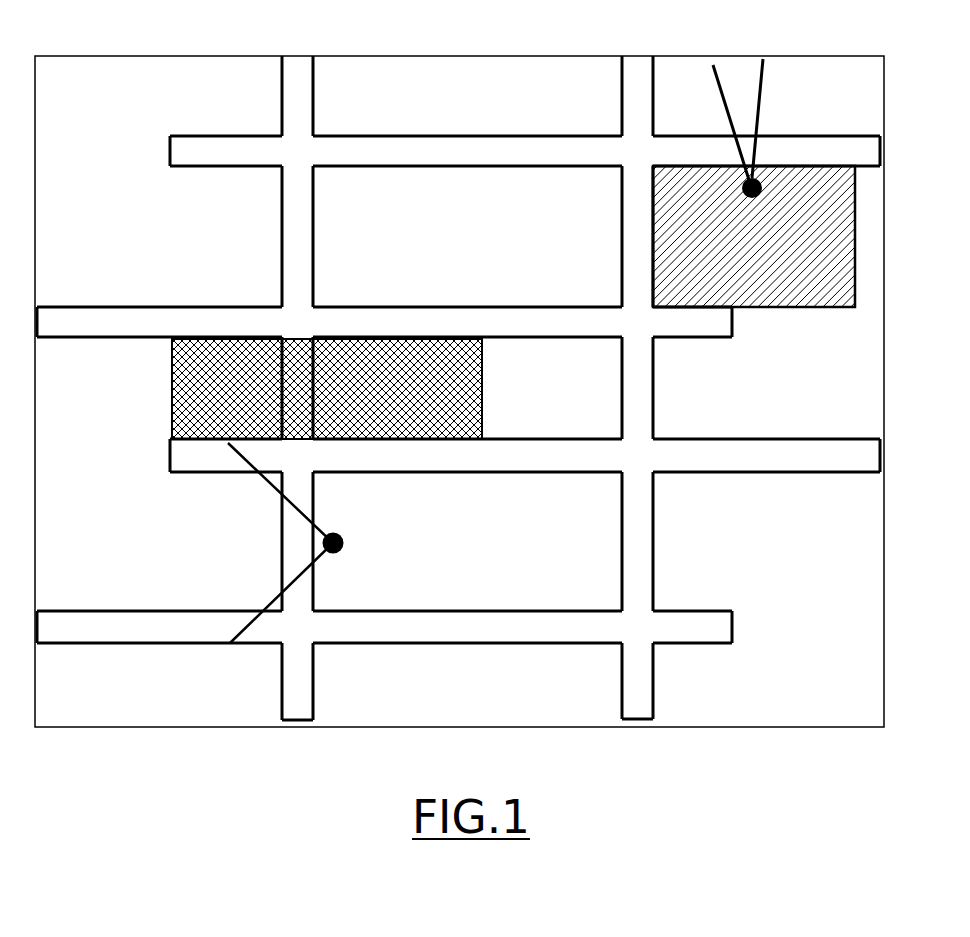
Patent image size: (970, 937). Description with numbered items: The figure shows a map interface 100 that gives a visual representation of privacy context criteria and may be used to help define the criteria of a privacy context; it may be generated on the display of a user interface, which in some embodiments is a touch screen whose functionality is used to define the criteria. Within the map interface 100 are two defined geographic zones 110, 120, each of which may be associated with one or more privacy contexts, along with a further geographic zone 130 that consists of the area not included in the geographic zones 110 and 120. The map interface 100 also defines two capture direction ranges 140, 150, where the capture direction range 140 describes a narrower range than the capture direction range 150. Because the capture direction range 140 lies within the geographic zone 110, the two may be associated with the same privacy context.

The map interface 100 is at (856, 45).
The geographic zone 110 is at (859, 195).
The geographic zone 120 is at (490, 375).
The geographic zone 130 is at (858, 386).
The capture direction range 140 is at (777, 178).
The capture direction range 150 is at (356, 545).